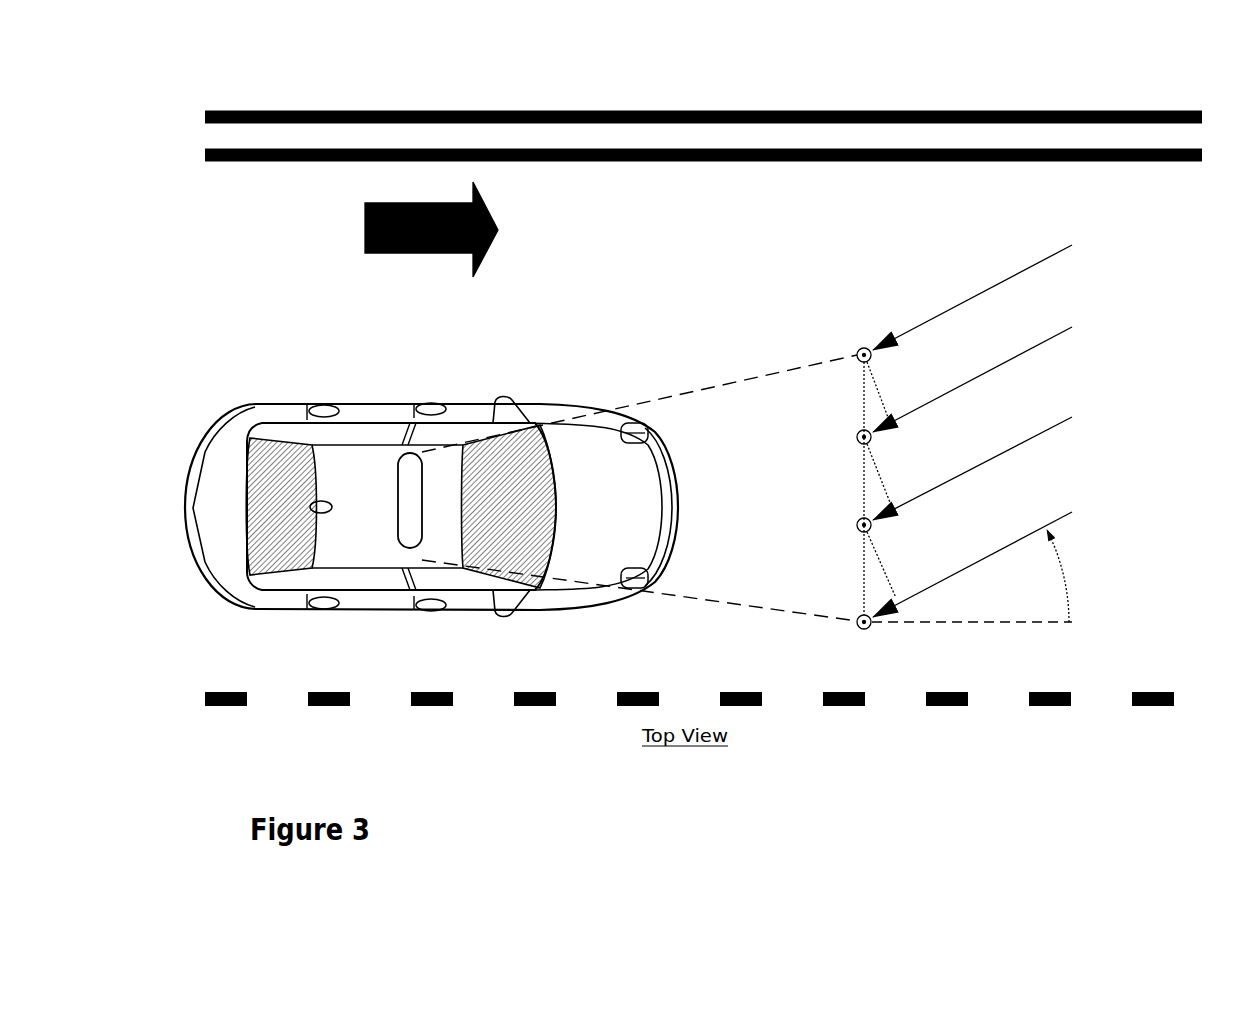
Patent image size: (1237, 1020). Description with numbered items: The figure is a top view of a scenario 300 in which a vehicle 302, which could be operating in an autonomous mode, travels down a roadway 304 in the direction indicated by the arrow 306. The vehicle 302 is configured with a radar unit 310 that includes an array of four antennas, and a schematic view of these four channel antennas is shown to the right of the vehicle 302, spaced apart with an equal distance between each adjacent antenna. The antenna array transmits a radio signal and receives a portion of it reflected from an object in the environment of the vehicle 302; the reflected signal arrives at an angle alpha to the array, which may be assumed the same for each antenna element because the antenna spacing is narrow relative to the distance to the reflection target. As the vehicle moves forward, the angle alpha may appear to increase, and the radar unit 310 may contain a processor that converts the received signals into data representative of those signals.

The scenario 300 is at (693, 356).
The vehicle 302 is at (431, 449).
The roadway 304 is at (617, 172).
The arrow 306 is at (492, 237).
The radar unit 310 is at (405, 483).